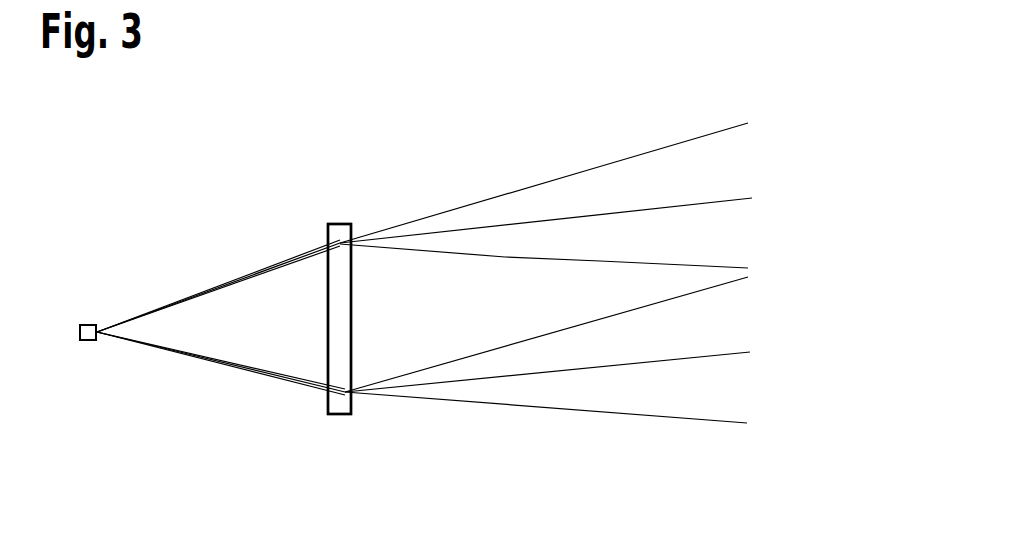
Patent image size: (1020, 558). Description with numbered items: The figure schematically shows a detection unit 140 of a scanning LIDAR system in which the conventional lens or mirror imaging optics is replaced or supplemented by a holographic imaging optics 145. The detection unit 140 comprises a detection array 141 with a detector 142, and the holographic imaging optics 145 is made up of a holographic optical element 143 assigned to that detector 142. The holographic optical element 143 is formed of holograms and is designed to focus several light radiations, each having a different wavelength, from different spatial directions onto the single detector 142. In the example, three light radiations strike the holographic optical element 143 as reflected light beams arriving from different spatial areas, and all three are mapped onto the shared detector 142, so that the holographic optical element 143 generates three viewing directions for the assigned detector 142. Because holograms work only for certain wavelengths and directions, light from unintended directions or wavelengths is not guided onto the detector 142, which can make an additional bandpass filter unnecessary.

The detection unit 140 is at (120, 224).
The detection array 141 is at (196, 402).
The detector 142 is at (90, 323).
The holographic optical element 143 is at (340, 405).
The holographic imaging optics 145 is at (340, 203).